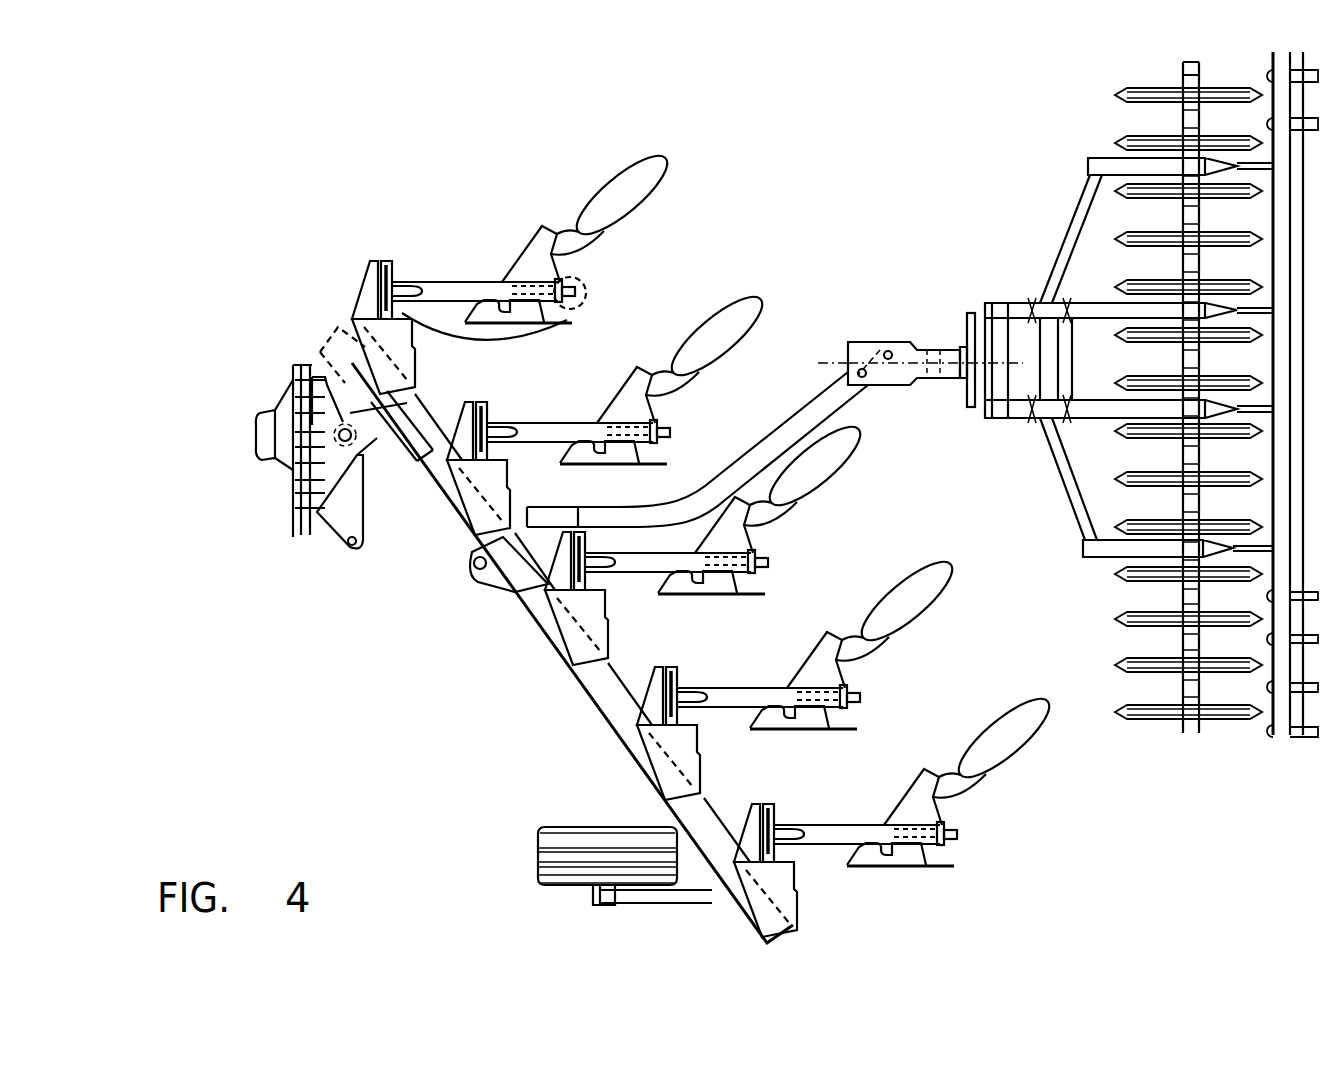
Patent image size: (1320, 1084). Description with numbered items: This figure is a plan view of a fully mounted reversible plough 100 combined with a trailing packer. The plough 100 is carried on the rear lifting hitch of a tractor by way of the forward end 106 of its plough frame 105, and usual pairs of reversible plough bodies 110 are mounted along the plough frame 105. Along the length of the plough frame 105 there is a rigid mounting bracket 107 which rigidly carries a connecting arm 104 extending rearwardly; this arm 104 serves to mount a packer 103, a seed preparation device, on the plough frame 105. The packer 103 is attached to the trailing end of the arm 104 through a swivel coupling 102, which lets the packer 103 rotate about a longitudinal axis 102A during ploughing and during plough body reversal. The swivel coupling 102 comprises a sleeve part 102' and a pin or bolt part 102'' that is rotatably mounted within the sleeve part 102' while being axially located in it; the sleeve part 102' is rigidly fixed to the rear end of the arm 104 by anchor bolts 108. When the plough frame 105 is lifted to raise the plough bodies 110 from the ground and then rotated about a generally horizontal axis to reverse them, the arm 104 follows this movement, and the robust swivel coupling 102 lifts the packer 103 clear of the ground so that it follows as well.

The reversible plough 100 is at (540, 672).
The swivel coupling 102 is at (1059, 310).
The longitudinal axis 102A is at (832, 363).
The sleeve part 102' is at (935, 423).
The pin or bolt part 102'' is at (904, 421).
The packer 103 is at (1103, 127).
The connecting arm 104 is at (748, 453).
The plough frame 105 is at (478, 545).
The forward end 106 is at (367, 445).
The rigid mounting bracket 107 is at (486, 572).
The anchor bolts 108 is at (888, 352).
The reversible plough bodies 110 is at (1000, 738).